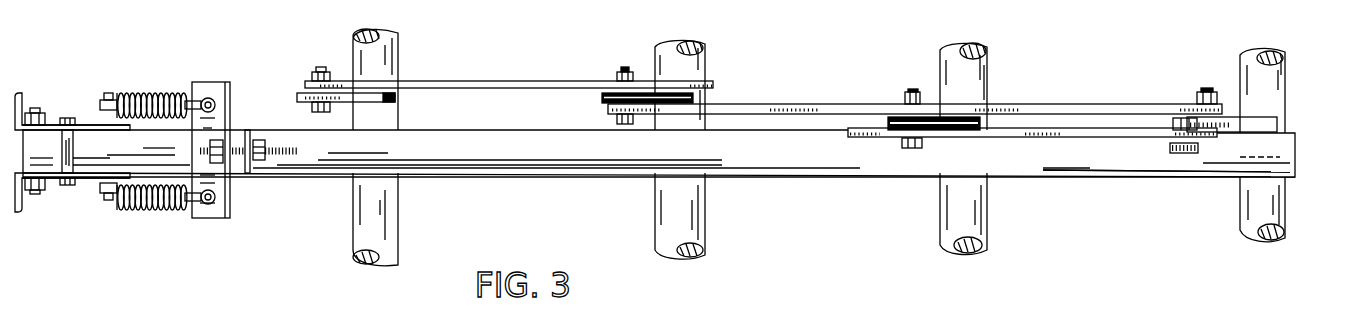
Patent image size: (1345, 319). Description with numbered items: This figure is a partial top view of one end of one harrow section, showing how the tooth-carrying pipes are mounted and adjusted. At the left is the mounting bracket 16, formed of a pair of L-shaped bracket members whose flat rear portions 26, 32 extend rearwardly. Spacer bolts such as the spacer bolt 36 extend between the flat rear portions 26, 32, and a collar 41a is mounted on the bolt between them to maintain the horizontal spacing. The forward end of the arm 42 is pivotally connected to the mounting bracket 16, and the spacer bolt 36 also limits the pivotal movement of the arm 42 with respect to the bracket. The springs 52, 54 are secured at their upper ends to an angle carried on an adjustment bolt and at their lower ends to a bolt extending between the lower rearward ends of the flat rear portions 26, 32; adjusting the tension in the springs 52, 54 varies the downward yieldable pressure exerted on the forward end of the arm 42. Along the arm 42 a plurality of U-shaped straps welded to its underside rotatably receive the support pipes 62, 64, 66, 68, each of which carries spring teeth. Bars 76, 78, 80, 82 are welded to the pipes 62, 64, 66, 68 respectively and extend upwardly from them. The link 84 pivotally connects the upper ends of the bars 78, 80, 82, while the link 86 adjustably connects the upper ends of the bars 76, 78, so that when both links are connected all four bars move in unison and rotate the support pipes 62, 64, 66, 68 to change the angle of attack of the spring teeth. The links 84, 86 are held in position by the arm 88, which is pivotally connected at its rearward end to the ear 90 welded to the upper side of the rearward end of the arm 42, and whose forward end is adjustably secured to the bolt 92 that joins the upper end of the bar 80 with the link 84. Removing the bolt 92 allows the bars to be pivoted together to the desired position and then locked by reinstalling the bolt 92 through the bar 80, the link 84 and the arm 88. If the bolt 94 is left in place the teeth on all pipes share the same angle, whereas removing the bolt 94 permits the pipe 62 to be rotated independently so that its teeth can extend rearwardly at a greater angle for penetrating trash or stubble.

The mounting bracket 16 is at (52, 96).
The flat rear portion 26 is at (85, 179).
The flat rear portion 32 is at (85, 125).
The spacer bolt 36 is at (68, 186).
The collar 41a is at (65, 160).
The arm 42 is at (562, 153).
The spring 52 is at (148, 211).
The spring 54 is at (152, 93).
The support pipe 62 is at (387, 210).
The support pipe 64 is at (672, 213).
The support pipe 66 is at (962, 197).
The support pipe 68 is at (1250, 188).
The bar 76 is at (393, 97).
The bar 78 is at (605, 98).
The bar 80 is at (852, 126).
The bar 82 is at (1233, 123).
The link 84 is at (807, 104).
The link 86 is at (456, 82).
The arm 88 is at (1100, 145).
The ear 90 is at (1173, 151).
The bolt 92 is at (908, 149).
The bolt 94 is at (620, 70).